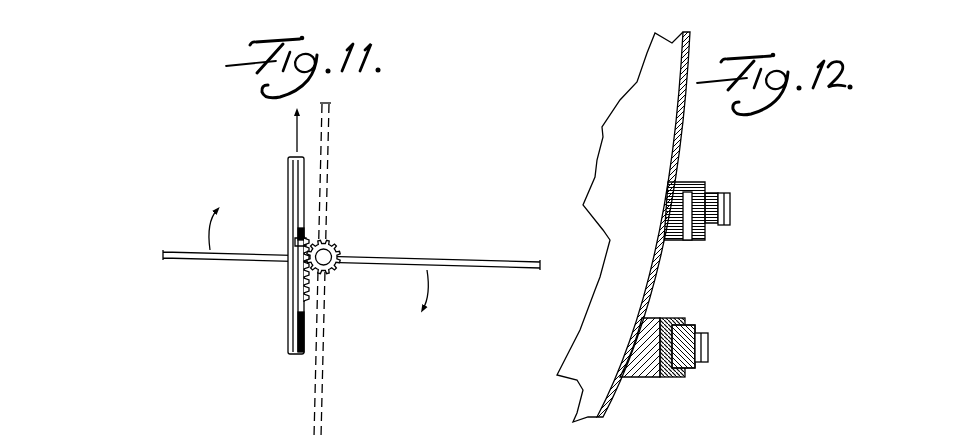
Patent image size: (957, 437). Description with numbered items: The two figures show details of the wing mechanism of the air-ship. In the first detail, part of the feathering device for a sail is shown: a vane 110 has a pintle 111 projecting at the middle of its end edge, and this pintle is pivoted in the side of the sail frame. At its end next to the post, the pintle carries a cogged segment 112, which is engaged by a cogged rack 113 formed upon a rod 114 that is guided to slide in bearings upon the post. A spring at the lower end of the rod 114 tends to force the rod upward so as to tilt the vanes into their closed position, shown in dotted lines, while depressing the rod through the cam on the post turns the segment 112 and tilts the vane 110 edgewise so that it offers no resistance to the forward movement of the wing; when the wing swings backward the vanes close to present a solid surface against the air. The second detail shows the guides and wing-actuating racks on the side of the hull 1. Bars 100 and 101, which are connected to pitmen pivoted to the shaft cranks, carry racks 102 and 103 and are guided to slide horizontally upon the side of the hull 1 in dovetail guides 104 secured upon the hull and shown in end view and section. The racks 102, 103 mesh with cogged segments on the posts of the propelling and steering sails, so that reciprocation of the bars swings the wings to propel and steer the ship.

In FIG. 12, the hull 1 is at (679, 127).
In FIG. 12, the bar 100 is at (690, 330).
In FIG. 12, the bar 101 is at (700, 205).
In FIG. 12, the rack 102 is at (708, 348).
In FIG. 12, the rack 103 is at (730, 210).
In FIG. 12, the dovetail guide 104 is at (691, 240).
In FIG. 11, the vane 110 is at (347, 259).
In FIG. 11, the pintle 111 is at (326, 254).
In FIG. 11, the cogged segment 112 is at (331, 274).
In FIG. 11, the cogged rack 113 is at (303, 281).
In FIG. 11, the rod 114 is at (290, 333).